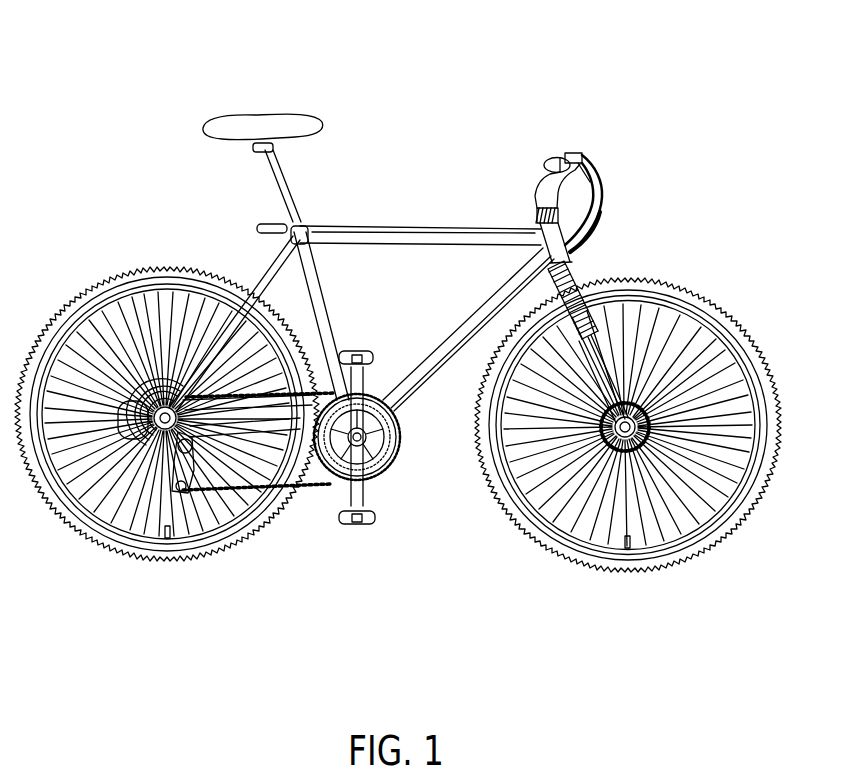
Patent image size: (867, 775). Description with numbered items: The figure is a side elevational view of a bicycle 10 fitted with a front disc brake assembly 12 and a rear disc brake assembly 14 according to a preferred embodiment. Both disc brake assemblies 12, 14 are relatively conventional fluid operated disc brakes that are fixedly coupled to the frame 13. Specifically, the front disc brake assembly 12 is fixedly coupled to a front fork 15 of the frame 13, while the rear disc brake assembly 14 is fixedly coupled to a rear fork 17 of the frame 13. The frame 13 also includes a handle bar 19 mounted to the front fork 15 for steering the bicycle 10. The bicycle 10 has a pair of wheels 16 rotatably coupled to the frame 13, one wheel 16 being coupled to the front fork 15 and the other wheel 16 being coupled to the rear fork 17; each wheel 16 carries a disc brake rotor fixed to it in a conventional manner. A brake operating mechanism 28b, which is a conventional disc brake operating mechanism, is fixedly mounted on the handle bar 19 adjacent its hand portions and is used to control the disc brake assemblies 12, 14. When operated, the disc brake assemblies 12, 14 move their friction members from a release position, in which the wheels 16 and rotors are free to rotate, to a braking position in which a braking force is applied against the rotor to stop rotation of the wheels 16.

The bicycle 10 is at (620, 150).
The front disc brake assembly 12 is at (664, 406).
The frame 13 is at (405, 254).
The rear disc brake assembly 14 is at (181, 366).
The front fork 15 is at (607, 352).
The wheels 16 is at (80, 293).
The rear fork 17 is at (195, 383).
The handle bar 19 is at (565, 152).
The brake operating mechanism 28b is at (576, 146).